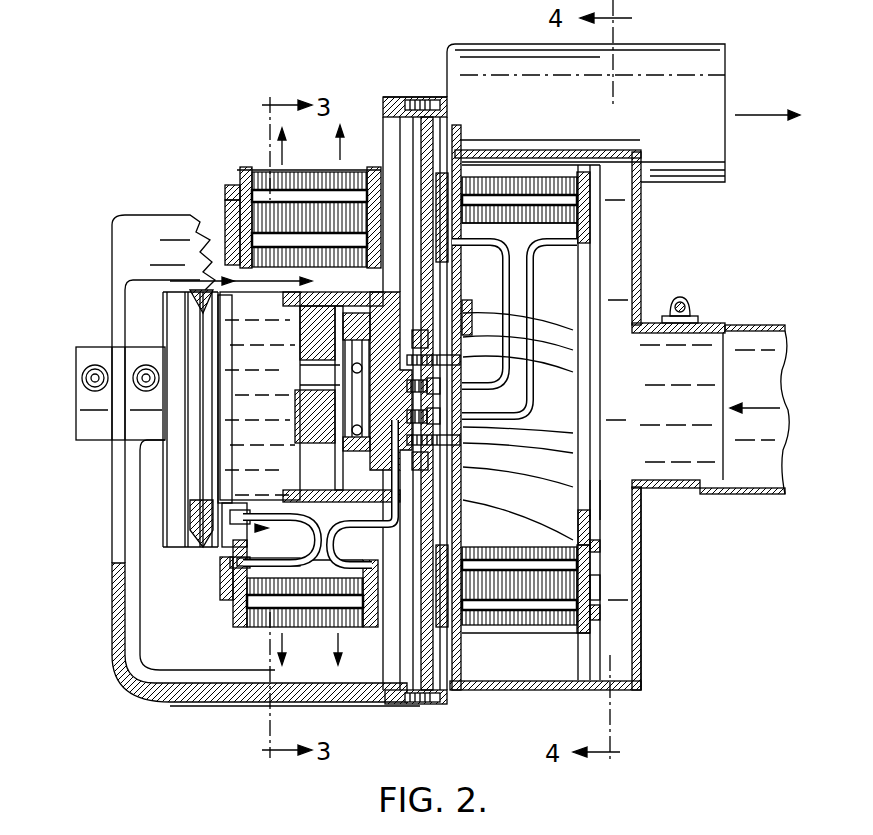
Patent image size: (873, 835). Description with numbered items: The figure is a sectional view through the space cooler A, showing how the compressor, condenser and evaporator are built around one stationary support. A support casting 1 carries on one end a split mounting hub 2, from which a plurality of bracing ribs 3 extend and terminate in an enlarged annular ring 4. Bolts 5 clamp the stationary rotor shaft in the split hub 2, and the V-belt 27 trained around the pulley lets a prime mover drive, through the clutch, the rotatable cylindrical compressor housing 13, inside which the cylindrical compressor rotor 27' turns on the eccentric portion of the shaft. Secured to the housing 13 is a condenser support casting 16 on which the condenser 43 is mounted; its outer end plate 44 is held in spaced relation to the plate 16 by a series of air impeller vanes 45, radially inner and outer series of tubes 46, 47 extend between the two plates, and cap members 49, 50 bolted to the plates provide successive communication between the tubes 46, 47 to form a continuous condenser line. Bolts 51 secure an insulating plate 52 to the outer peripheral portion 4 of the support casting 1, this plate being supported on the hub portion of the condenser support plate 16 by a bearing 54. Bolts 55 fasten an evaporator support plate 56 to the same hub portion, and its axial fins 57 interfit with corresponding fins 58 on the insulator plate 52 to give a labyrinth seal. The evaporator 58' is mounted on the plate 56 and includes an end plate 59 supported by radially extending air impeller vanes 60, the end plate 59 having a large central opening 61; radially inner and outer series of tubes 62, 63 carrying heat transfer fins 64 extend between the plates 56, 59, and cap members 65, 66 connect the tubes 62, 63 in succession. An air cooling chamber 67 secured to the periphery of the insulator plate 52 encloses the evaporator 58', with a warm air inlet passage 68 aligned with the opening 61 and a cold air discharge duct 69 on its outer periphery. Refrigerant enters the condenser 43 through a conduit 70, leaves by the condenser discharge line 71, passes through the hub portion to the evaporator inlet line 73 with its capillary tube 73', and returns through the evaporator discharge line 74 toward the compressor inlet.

The support casting 1 is at (155, 697).
The split mounting hub 2 is at (94, 350).
The bracing ribs 3 is at (125, 250).
The enlarged annular ring 4 is at (398, 96).
The bolts 5 is at (146, 365).
The compressor housing 13 is at (322, 300).
The condenser support casting 16 is at (377, 168).
The V-belt 27 is at (190, 423).
The compressor rotor 27' is at (320, 398).
The condenser 43 is at (263, 156).
The outer end plate 44 is at (246, 165).
The air impeller vanes 45 is at (340, 170).
The radially inner series of tubes 46 is at (342, 262).
The radially outer series of tubes 47 is at (233, 193).
The cap member 49 is at (228, 205).
The cap member 50 is at (397, 230).
The bolts 51 is at (440, 102).
The insulating plate 52 is at (424, 148).
The bearing 54 is at (405, 345).
The bolts 55 is at (466, 340).
The evaporator support plate 56 is at (468, 480).
The axial fins 57 is at (455, 282).
The fins 58 is at (479, 317).
The evaporator 58' is at (526, 179).
The end plate 59 is at (578, 633).
The air impeller vanes 60 is at (492, 515).
The central opening 61 is at (590, 505).
The radially inner series of tubes 62 is at (592, 548).
The radially outer series of tubes 63 is at (592, 615).
The heat transfer fins 64 is at (510, 625).
The cap member 65 is at (430, 605).
The cap member 66 is at (592, 596).
The air cooling chamber 67 is at (648, 260).
The warm air inlet passage 68 is at (716, 372).
The cold air discharge duct 69 is at (725, 62).
The conduit 70 is at (298, 563).
The condenser discharge line 71 is at (345, 518).
The evaporator inlet line 73 is at (487, 414).
The capillary tube 73' is at (460, 396).
The evaporator discharge line 74 is at (488, 244).
The space cooler A is at (648, 634).